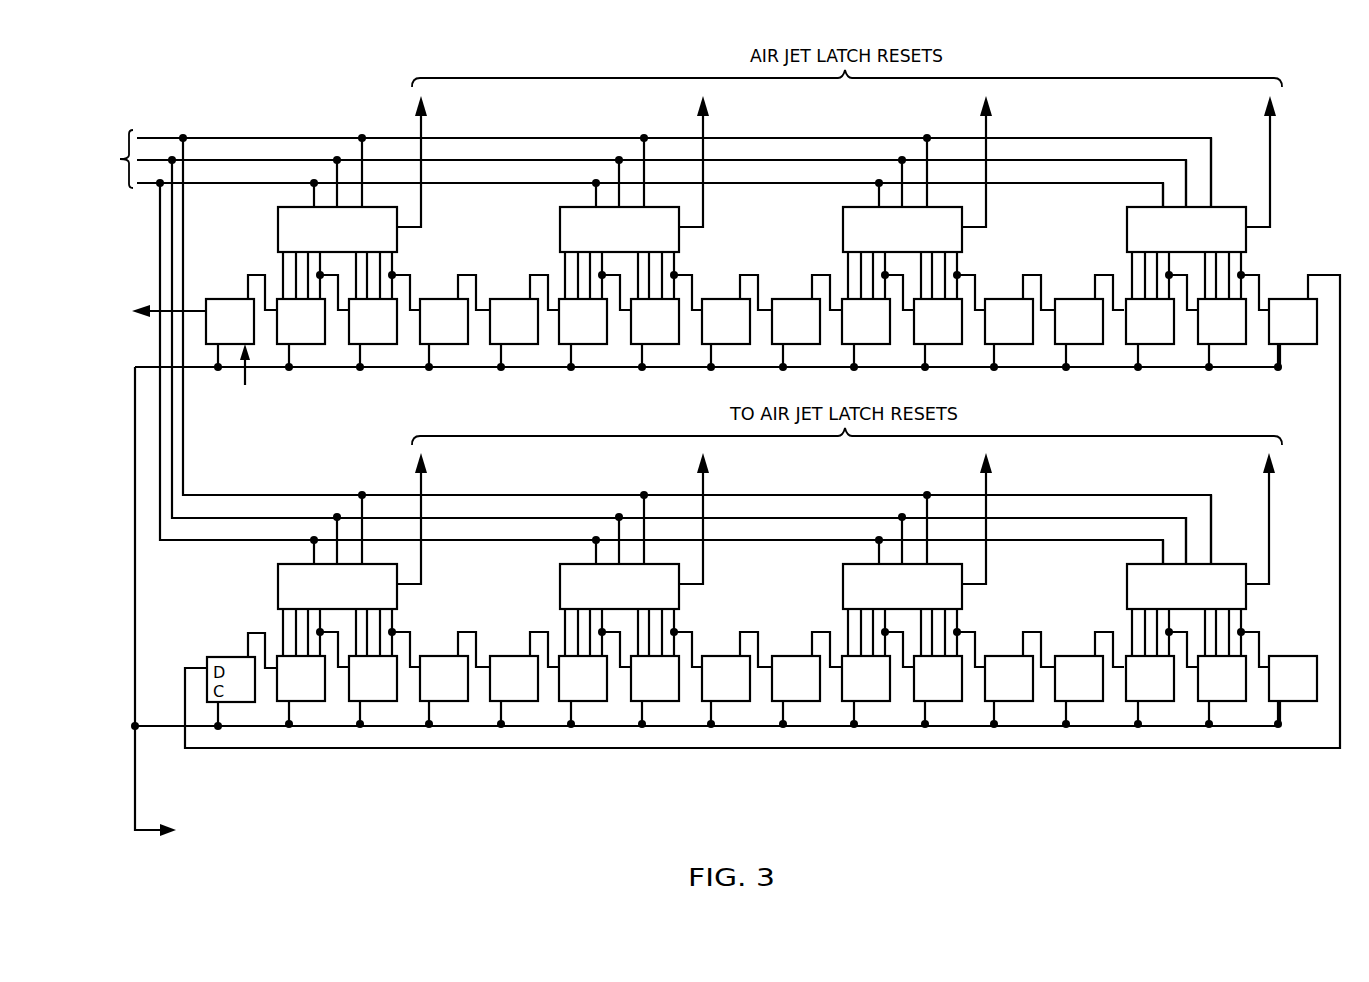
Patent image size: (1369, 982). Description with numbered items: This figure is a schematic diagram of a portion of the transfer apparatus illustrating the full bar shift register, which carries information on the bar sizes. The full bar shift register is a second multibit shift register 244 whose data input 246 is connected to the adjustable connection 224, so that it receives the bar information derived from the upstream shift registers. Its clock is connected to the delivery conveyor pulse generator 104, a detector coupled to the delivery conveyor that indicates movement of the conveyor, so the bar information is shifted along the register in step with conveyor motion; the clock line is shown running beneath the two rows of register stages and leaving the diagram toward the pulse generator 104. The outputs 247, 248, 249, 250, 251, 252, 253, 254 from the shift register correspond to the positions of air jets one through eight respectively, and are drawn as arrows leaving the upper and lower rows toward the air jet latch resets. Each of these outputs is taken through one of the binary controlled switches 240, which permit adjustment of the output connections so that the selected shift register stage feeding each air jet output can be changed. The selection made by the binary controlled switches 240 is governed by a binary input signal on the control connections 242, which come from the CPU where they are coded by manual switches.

The pulse generator 104 is at (384, 602).
The adjustable connection 224 is at (152, 314).
The binary controlled switches 240 is at (397, 240).
The control connections 242 is at (258, 183).
The second multibit shift register 244 is at (246, 376).
The data input 246 is at (205, 304).
The output 247 is at (421, 124).
The output 248 is at (703, 124).
The output 249 is at (986, 123).
The output 250 is at (1270, 125).
The output 251 is at (421, 487).
The output 252 is at (703, 487).
The output 253 is at (986, 487).
The output 254 is at (1269, 480).